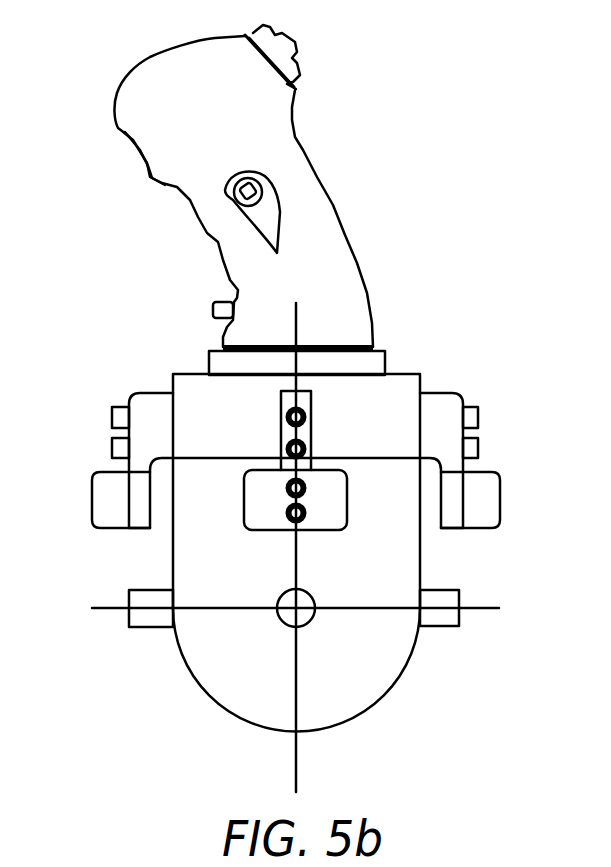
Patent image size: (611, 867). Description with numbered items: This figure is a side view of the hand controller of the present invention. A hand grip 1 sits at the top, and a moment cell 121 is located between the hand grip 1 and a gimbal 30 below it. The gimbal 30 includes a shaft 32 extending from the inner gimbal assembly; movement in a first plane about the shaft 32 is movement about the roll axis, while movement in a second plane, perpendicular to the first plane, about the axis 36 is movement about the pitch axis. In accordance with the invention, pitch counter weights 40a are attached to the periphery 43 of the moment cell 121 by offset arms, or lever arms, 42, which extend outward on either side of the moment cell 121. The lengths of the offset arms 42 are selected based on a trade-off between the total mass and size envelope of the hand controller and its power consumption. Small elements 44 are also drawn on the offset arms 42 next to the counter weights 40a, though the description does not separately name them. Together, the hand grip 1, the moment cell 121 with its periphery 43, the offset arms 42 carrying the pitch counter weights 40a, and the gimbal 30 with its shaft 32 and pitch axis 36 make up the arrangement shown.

The hand grip 1 is at (300, 148).
The moment cell 121 is at (402, 372).
The gimbal 30 is at (402, 670).
The periphery 43 is at (423, 380).
The offset arms 42 is at (132, 395).
The switch 44 is at (478, 447).
The pitch counter weights 40a is at (92, 507).
The shaft 32 is at (459, 593).
The axis 36 is at (307, 617).